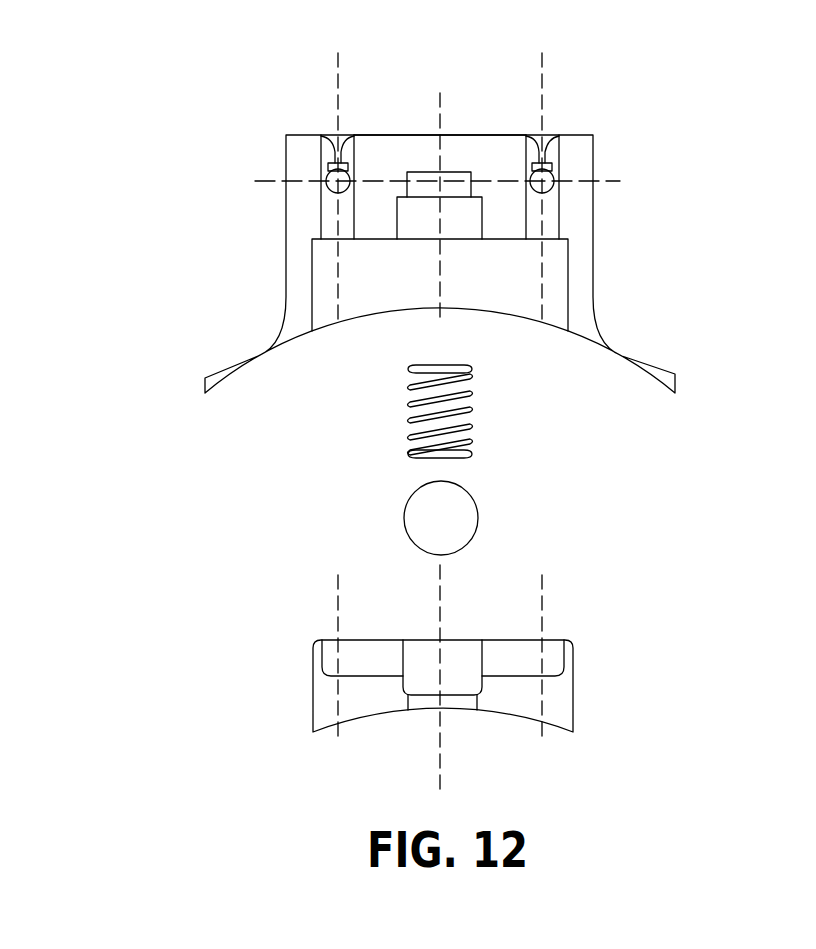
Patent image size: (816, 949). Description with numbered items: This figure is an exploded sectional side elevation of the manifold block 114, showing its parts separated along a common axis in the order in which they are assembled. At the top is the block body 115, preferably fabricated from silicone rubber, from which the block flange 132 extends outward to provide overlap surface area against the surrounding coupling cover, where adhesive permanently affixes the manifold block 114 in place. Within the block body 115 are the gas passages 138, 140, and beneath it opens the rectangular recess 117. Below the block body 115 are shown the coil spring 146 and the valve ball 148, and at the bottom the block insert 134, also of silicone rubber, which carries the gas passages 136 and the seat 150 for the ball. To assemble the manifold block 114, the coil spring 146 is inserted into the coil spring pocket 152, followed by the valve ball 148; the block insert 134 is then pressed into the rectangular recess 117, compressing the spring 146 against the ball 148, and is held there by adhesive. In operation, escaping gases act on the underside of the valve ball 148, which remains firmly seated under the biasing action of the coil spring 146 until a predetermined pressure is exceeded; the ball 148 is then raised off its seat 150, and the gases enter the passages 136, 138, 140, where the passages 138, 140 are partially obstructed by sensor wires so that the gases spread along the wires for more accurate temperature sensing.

The manifold block 114 is at (178, 149).
The block body 115 is at (382, 148).
The rectangular recess 117 is at (567, 303).
The block flange 132 is at (227, 365).
The block insert 134 is at (325, 687).
The gas passages 136 is at (333, 652).
The gas passage 138 is at (332, 222).
The gas passage 140 is at (552, 219).
The coil spring 146 is at (409, 416).
The valve ball 148 is at (417, 522).
The seat 150 is at (482, 690).
The coil spring pocket 152 is at (408, 188).